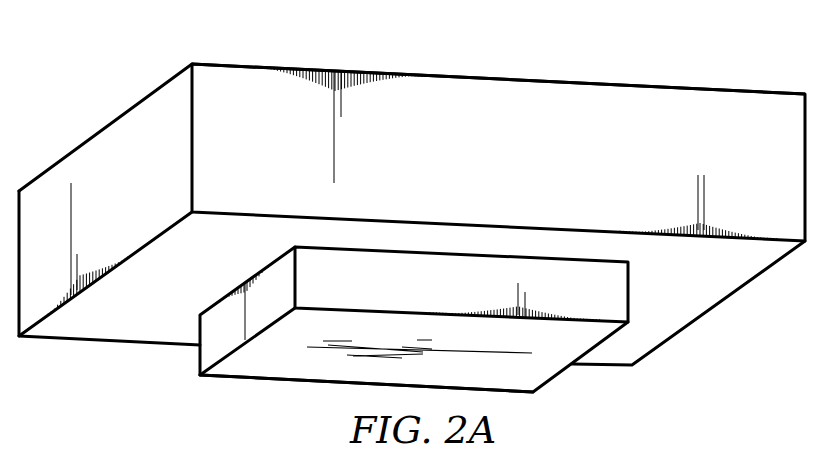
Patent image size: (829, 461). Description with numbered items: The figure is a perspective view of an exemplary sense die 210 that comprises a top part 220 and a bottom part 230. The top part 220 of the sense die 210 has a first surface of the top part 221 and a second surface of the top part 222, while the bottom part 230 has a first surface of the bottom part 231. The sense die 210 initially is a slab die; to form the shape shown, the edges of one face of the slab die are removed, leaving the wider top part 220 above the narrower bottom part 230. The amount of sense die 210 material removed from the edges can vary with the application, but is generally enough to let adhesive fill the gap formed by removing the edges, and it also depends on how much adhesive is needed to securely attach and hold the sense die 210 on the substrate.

The sense die 210 is at (580, 45).
The top part 220 is at (668, 135).
The first surface of the top part 221 is at (492, 76).
The second surface of the top part 222 is at (143, 305).
The bottom part 230 is at (523, 375).
The first surface of the bottom part 231 is at (296, 364).